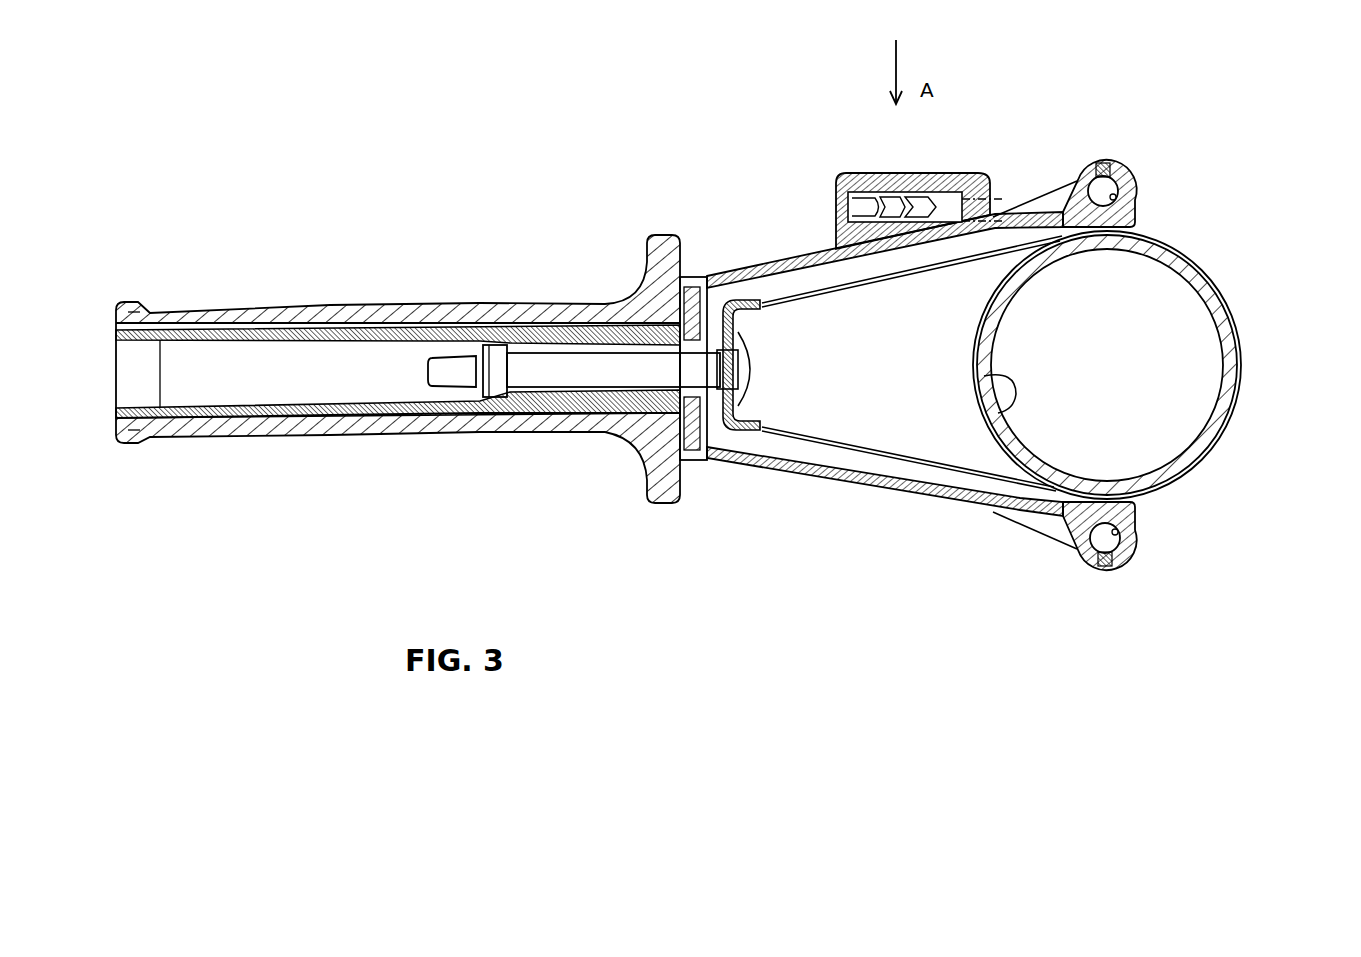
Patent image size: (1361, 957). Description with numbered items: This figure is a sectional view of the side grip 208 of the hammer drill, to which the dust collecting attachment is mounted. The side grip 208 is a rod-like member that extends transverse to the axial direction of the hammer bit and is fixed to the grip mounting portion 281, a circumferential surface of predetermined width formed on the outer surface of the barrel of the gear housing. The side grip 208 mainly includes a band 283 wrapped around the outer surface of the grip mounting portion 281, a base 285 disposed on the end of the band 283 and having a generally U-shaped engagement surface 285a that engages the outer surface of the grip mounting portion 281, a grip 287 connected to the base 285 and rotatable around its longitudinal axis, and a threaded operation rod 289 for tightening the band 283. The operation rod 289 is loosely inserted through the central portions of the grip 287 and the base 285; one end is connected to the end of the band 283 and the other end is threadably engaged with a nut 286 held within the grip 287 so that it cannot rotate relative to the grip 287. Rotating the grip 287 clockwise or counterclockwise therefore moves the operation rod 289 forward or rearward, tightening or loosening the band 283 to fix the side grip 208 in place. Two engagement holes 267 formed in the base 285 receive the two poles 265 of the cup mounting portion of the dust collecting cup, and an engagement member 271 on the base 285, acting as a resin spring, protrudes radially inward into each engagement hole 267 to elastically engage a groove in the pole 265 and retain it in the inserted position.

The side grip 208 is at (388, 250).
The grip 287 is at (248, 307).
The nut 286 is at (490, 356).
The threaded operation rod 289 is at (582, 364).
The base 285 is at (787, 257).
The engagement surface 285a is at (1001, 415).
The pole 265 is at (1108, 190).
The engagement hole 267 is at (1118, 198).
The engagement member 271 is at (1101, 172).
The band 283 is at (1233, 312).
The grip mounting portion 281 is at (1233, 383).